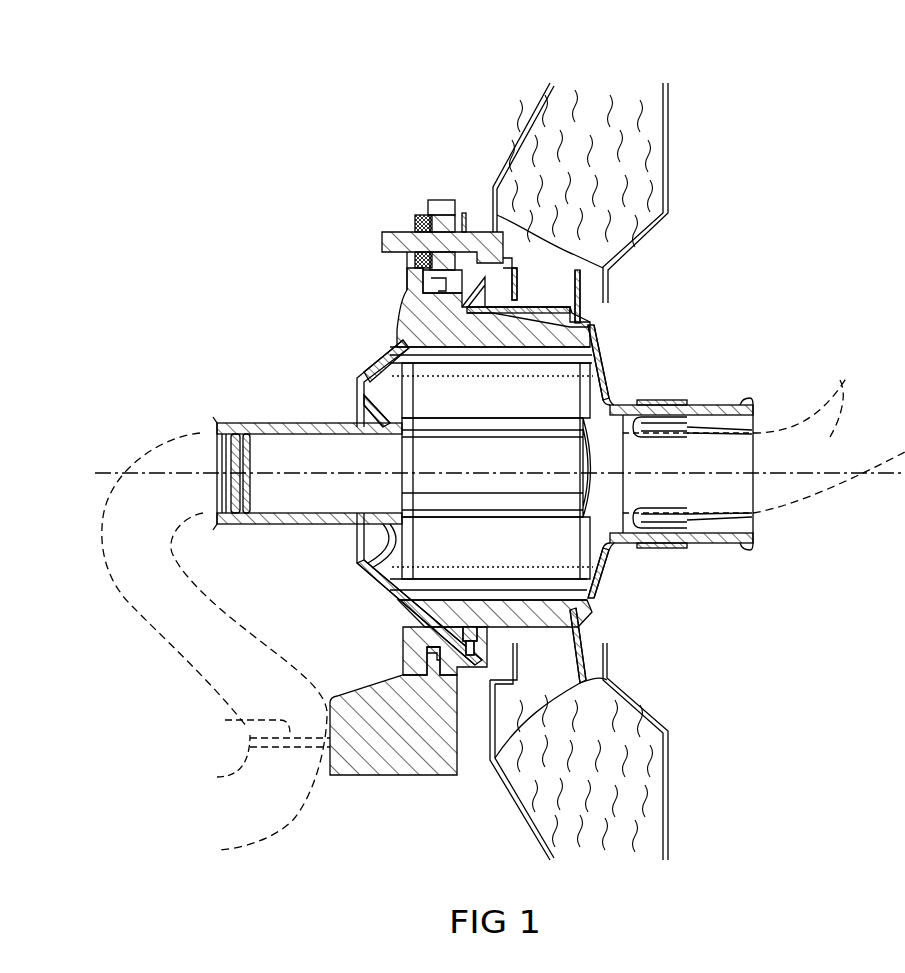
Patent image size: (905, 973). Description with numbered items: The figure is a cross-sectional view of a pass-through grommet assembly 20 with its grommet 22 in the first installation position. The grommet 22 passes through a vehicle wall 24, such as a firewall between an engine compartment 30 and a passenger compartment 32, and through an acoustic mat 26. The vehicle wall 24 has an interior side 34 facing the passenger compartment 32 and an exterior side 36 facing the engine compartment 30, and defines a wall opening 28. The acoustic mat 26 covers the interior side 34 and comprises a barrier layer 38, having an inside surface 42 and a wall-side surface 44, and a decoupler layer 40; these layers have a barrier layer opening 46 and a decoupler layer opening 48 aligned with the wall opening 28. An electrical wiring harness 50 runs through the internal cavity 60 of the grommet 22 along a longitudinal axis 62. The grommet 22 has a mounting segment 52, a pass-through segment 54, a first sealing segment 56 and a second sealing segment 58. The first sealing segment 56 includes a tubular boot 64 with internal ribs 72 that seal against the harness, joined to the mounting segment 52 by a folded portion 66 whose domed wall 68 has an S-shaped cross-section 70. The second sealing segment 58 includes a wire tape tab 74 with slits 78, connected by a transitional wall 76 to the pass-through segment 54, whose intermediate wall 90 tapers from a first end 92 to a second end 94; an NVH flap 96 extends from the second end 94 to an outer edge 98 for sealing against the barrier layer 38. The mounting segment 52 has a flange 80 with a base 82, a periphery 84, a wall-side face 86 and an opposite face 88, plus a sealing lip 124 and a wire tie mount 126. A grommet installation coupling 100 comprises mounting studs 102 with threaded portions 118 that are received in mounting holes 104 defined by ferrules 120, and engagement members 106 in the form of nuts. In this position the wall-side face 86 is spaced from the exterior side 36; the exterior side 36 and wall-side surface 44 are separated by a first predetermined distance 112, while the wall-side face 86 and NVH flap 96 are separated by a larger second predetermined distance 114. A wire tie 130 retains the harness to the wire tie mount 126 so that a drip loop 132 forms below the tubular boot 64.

The pass-through grommet assembly 20 is at (347, 78).
The grommet 22 is at (332, 372).
The vehicle wall 24 is at (530, 126).
The acoustic mat 26 is at (680, 102).
The wall opening 28 is at (488, 688).
The engine compartment 30 is at (203, 348).
The passenger compartment 32 is at (778, 337).
The interior side 34 is at (562, 87).
The exterior side 36 is at (540, 87).
The barrier layer 38 is at (669, 136).
The decoupler layer 40 is at (607, 130).
The inside surface 42 is at (653, 240).
The wall-side surface 44 is at (631, 230).
The barrier layer opening 46 is at (608, 318).
The decoupler layer opening 48 is at (541, 663).
The electrical wiring harness 50 is at (167, 460).
The mounting segment 52 is at (492, 390).
The pass-through segment 54 is at (525, 387).
The first sealing segment 56 is at (243, 545).
The second sealing segment 58 is at (660, 572).
The internal cavity 60 is at (492, 498).
The longitudinal axis 62 is at (792, 484).
The tubular boot 64 is at (342, 422).
The folded portion 66 is at (338, 550).
The domed wall 68 is at (388, 572).
The S-shaped cross-section 70 is at (382, 550).
The internal ribs 72 is at (246, 510).
The wire tape tab 74 is at (695, 545).
The transitional wall 76 is at (606, 380).
The slits 78 is at (715, 418).
The flange 80 is at (403, 290).
The base 82 is at (428, 340).
The periphery 84 is at (440, 197).
The wall-side face 86 is at (460, 793).
The opposite face 88 is at (402, 647).
The intermediate wall 90 is at (583, 604).
The first end 92 is at (475, 583).
The second end 94 is at (607, 624).
The NVH flap 96 is at (607, 660).
The outer edge 98 is at (600, 687).
The grommet installation coupling 100 is at (362, 188).
The mounting studs 102 is at (480, 232).
The mounting holes 104 is at (410, 287).
The engagement members 106 is at (420, 217).
The first predetermined distance 112 is at (596, 267).
The second predetermined distance 114 is at (577, 310).
The threaded portion 118 is at (458, 210).
The ferrule 120 is at (430, 213).
The sealing lip 124 is at (403, 613).
The wire tie mount 126 is at (387, 767).
The wire tie 130 is at (261, 743).
The drip loop 132 is at (187, 690).